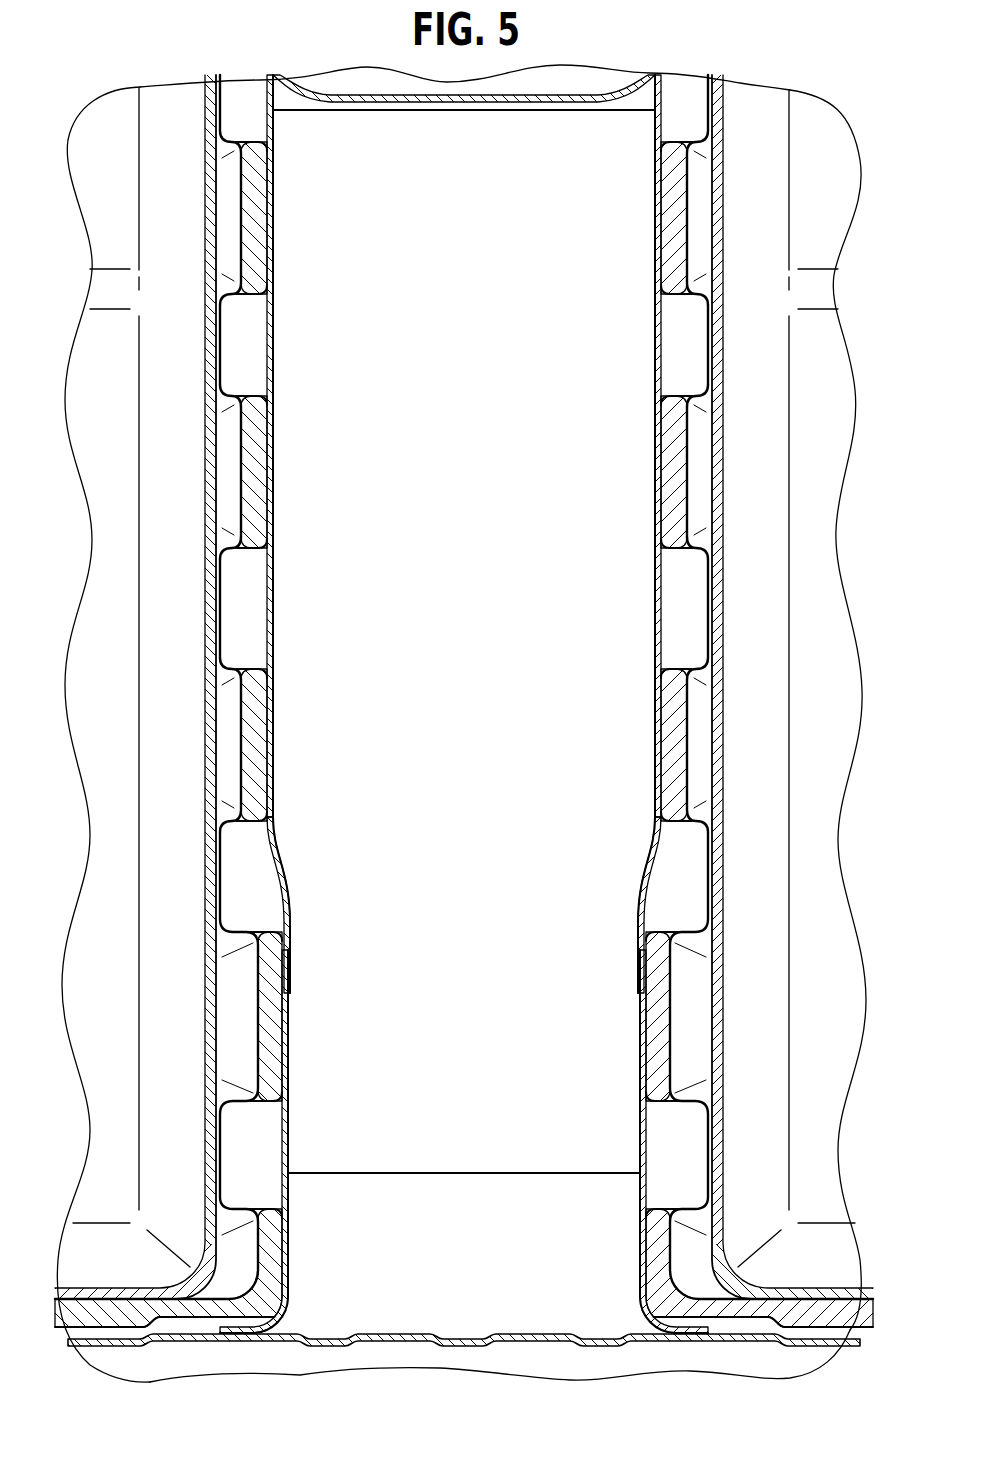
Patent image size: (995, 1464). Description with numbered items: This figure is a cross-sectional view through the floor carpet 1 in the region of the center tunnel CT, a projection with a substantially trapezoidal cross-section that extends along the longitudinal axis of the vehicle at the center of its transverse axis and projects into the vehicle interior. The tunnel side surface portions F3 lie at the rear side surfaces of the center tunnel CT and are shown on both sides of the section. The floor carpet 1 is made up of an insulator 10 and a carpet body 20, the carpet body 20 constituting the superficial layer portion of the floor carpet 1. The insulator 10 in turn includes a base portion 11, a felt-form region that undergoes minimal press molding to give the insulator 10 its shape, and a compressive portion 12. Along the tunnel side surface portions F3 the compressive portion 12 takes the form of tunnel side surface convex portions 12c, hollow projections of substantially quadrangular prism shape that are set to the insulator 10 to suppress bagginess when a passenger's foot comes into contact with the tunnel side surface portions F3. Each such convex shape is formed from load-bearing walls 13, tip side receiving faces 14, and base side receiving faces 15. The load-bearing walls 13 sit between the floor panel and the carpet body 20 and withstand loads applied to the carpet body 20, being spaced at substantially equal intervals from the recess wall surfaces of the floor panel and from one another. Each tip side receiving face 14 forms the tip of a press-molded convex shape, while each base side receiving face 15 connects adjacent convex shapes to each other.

The floor carpet 1 is at (464, 704).
The insulator 10 is at (253, 223).
The carpet body 20 is at (180, 167).
The base portion 11 is at (666, 745).
The compressive portion 12 is at (706, 612).
The tunnel side surface convex portion 12c is at (464, 608).
The load-bearing wall 13 is at (696, 398).
The tip side receiving face 14 is at (706, 333).
The base side receiving face 15 is at (666, 467).
The center tunnel CT is at (633, 917).
The tunnel side surface portion F3 is at (81, 527).